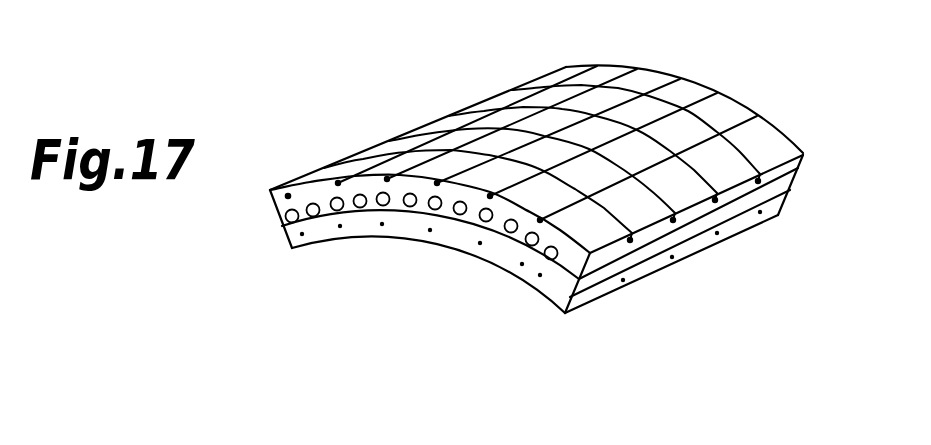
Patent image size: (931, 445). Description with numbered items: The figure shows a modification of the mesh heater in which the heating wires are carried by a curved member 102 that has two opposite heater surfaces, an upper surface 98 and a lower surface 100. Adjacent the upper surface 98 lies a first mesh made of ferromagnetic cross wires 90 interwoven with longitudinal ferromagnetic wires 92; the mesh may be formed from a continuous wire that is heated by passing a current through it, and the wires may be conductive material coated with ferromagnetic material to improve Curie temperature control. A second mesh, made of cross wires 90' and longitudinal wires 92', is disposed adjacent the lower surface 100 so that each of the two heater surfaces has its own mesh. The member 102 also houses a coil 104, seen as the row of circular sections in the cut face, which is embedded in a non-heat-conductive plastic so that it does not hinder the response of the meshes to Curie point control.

The member 102 is at (438, 93).
The surface 98 is at (648, 72).
The ferromagnetic cross wires 90 is at (546, 133).
The longitudinal ferromagnetic wires 92 is at (561, 160).
The longitudinal ferromagnetic wires 92' is at (430, 245).
The coil 104 is at (524, 234).
The surface 100 is at (552, 302).
The ferromagnetic cross wires 90' is at (684, 238).